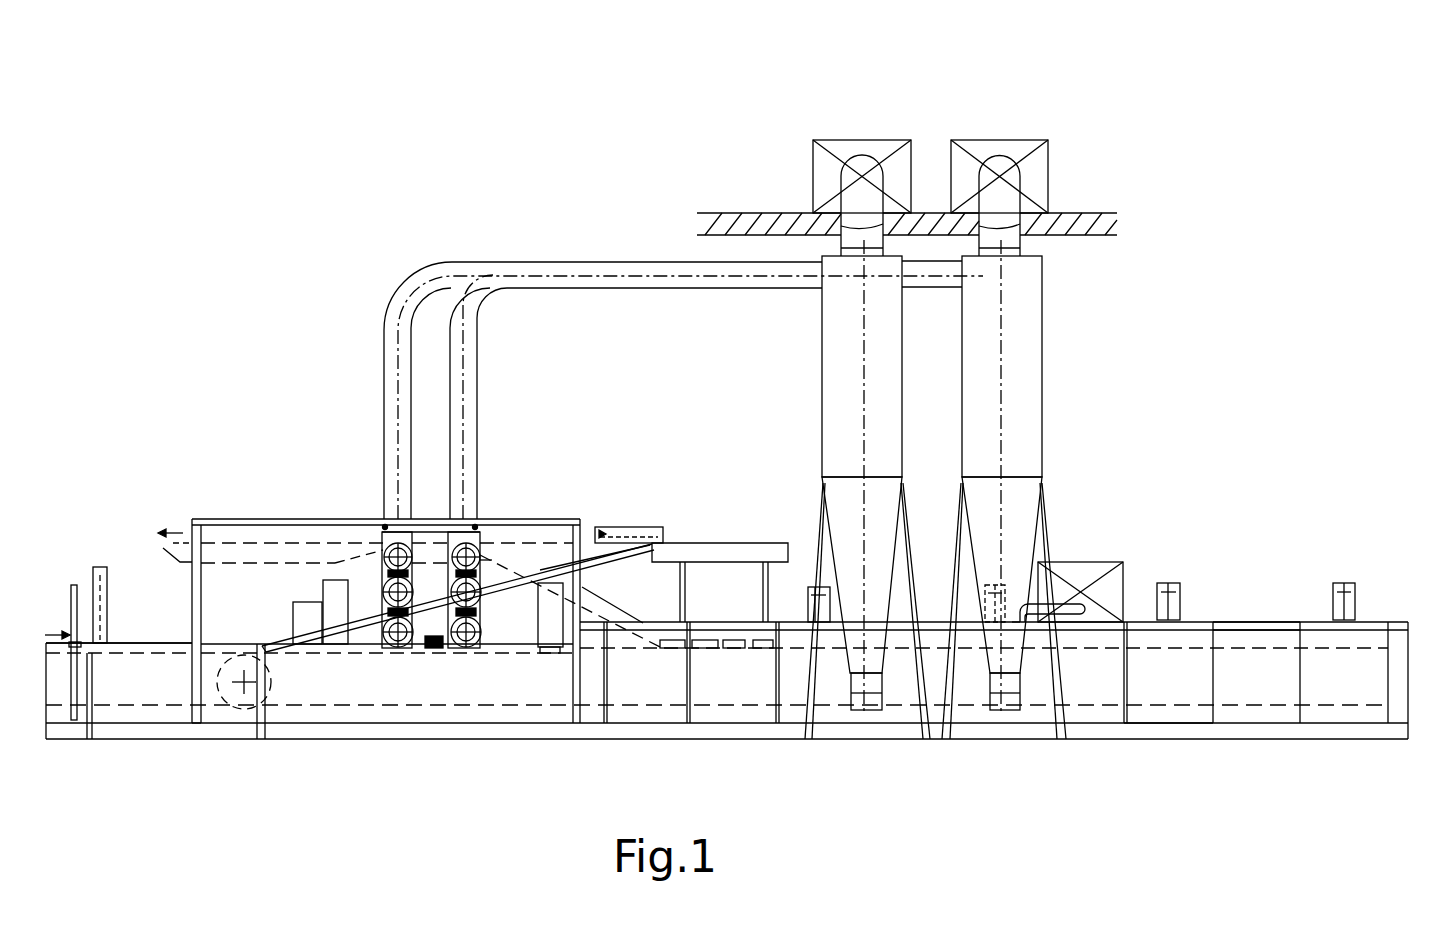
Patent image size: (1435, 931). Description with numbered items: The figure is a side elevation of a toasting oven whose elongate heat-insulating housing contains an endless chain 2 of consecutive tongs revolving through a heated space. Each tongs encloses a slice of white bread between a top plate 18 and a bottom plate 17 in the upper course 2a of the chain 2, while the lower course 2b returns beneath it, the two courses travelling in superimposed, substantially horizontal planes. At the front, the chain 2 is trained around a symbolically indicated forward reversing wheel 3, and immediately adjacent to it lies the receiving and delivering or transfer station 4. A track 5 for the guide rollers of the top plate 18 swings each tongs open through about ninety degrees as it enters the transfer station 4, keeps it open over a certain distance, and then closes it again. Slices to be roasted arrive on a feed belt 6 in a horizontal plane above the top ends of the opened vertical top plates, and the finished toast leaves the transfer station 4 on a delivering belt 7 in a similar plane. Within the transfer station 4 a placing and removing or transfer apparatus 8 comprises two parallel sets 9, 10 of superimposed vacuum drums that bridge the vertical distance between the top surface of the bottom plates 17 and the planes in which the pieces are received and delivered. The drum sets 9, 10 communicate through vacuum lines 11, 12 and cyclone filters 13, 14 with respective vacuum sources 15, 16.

The endless chain of tongs 2 is at (625, 707).
The upper course 2a is at (1246, 650).
The lower course 2b is at (1103, 705).
The forward reversing wheel 3 is at (242, 693).
The transfer station 4 is at (218, 508).
The track 5 is at (276, 630).
The feed belt 6 is at (543, 550).
The delivering belt 7 is at (168, 549).
The transfer apparatus 8 is at (372, 510).
The first set of vacuum drums 9 is at (393, 665).
The second set of vacuum drums 10 is at (486, 660).
The vacuum line 11 is at (397, 352).
The vacuum line 12 is at (466, 351).
The cyclone filter 13 is at (843, 358).
The cyclone filter 14 is at (1013, 358).
The vacuum source 15 is at (866, 126).
The vacuum source 16 is at (1006, 126).
The bottom plate 17 is at (548, 653).
The top plate 18 is at (305, 598).